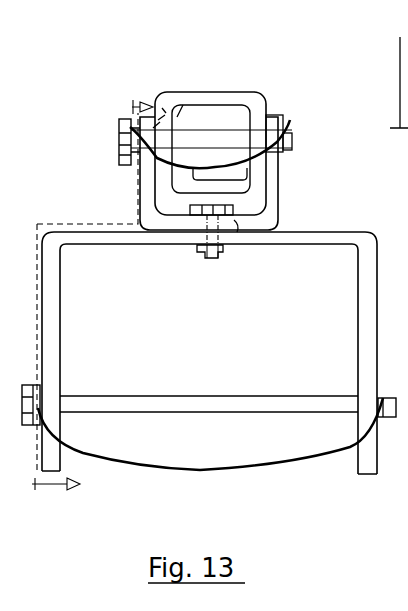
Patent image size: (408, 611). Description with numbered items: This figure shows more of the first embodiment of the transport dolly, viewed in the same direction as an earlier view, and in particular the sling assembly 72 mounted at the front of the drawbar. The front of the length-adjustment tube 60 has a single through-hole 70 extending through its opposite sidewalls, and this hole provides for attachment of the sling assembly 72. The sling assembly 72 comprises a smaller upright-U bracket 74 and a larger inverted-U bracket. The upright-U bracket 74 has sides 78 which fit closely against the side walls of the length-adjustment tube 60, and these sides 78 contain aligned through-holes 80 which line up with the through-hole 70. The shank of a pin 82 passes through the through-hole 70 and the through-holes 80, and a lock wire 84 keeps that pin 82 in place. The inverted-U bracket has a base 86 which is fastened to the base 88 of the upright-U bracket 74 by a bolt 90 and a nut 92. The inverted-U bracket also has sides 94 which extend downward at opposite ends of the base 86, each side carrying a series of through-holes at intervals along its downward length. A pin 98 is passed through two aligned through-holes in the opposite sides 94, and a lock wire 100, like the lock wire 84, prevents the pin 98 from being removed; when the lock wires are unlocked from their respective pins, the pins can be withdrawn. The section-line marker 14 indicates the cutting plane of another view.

The section line 14 is at (92, 298).
The length-adjustment tube 60 is at (250, 87).
The through-hole 70 is at (245, 123).
The sling assembly 72 is at (79, 196).
The upright-U bracket 74 is at (257, 212).
The sides 78 is at (133, 192).
The through-holes 80 is at (183, 82).
The pin 82 is at (118, 143).
The lock wire 84 is at (197, 163).
The base 86 is at (257, 242).
The base 88 is at (240, 232).
The bolt 90 is at (234, 213).
The nut 92 is at (205, 248).
The sides 94 is at (60, 355).
The pin 98 is at (174, 413).
The lock wire 100 is at (257, 468).